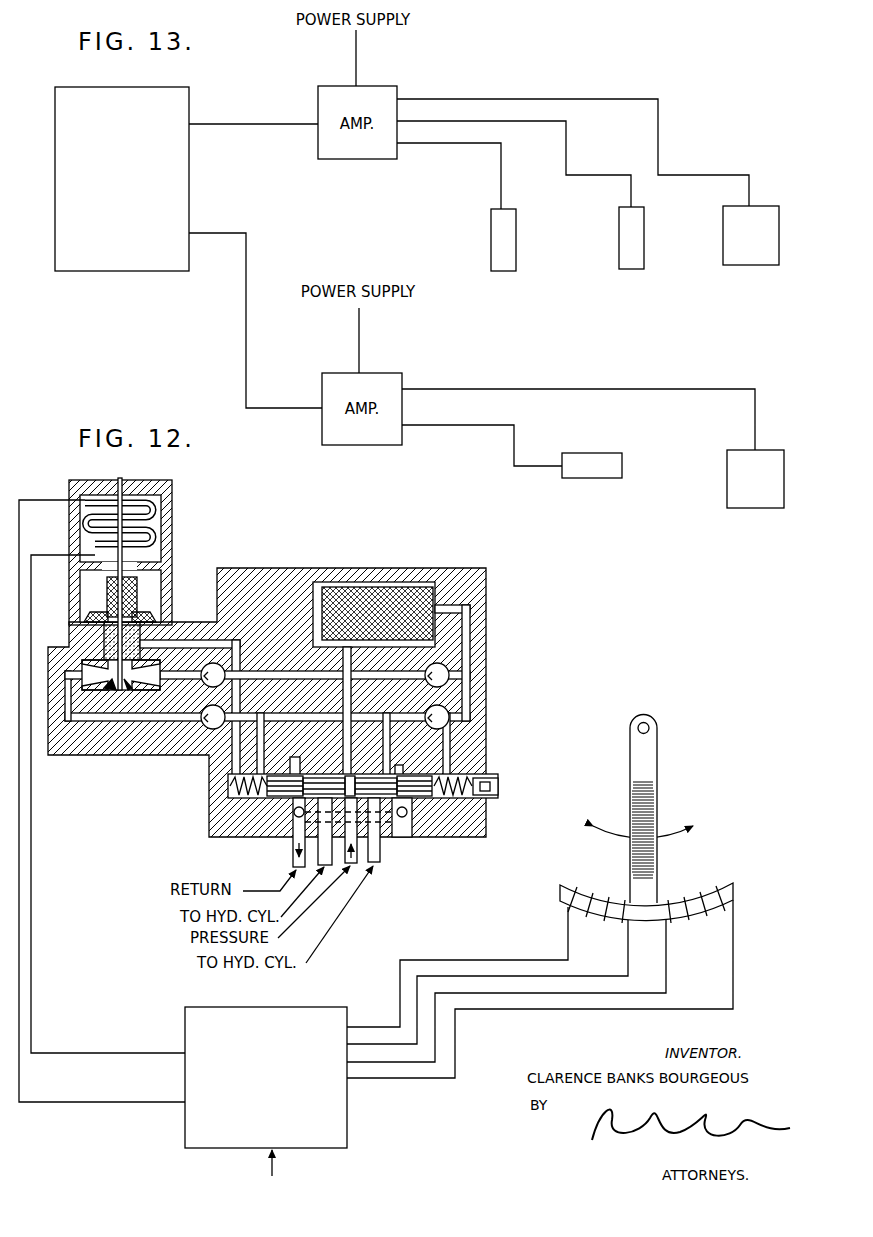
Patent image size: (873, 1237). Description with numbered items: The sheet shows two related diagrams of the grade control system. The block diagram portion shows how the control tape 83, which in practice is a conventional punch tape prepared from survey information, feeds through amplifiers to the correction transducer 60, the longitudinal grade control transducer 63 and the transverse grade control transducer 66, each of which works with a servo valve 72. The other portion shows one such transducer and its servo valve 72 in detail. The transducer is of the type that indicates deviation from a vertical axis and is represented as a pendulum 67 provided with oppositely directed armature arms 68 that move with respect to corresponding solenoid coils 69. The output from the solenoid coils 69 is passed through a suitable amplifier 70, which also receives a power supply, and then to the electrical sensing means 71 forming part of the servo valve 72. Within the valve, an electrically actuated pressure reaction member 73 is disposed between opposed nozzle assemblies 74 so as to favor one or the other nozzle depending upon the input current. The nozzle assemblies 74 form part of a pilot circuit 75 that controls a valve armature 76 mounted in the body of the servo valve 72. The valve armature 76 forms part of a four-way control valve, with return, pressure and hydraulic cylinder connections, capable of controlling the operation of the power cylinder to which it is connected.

In FIG. 13, the control tape 83 is at (121, 266).
In FIG. 13, the correction transducer 60 is at (496, 226).
In FIG. 13, the longitudinal grade control transducer 63 is at (628, 226).
In FIG. 13, the servo valve 72 is at (733, 474).
In FIG. 12, the servo valve 72 is at (263, 568).
In FIG. 13, the transverse grade control transducer 66 is at (593, 463).
In FIG. 12, the electrical sensing means 71 is at (150, 500).
In FIG. 12, the pressure reaction member 73 is at (120, 646).
In FIG. 12, the nozzle assemblies 74 is at (118, 690).
In FIG. 12, the pilot circuit 75 is at (253, 678).
In FIG. 12, the valve armature 76 is at (410, 790).
In FIG. 12, the amplifier 70 is at (305, 1010).
In FIG. 12, the pendulum 67 is at (648, 780).
In FIG. 12, the armature arms 68 is at (733, 882).
In FIG. 12, the solenoid coils 69 is at (690, 912).